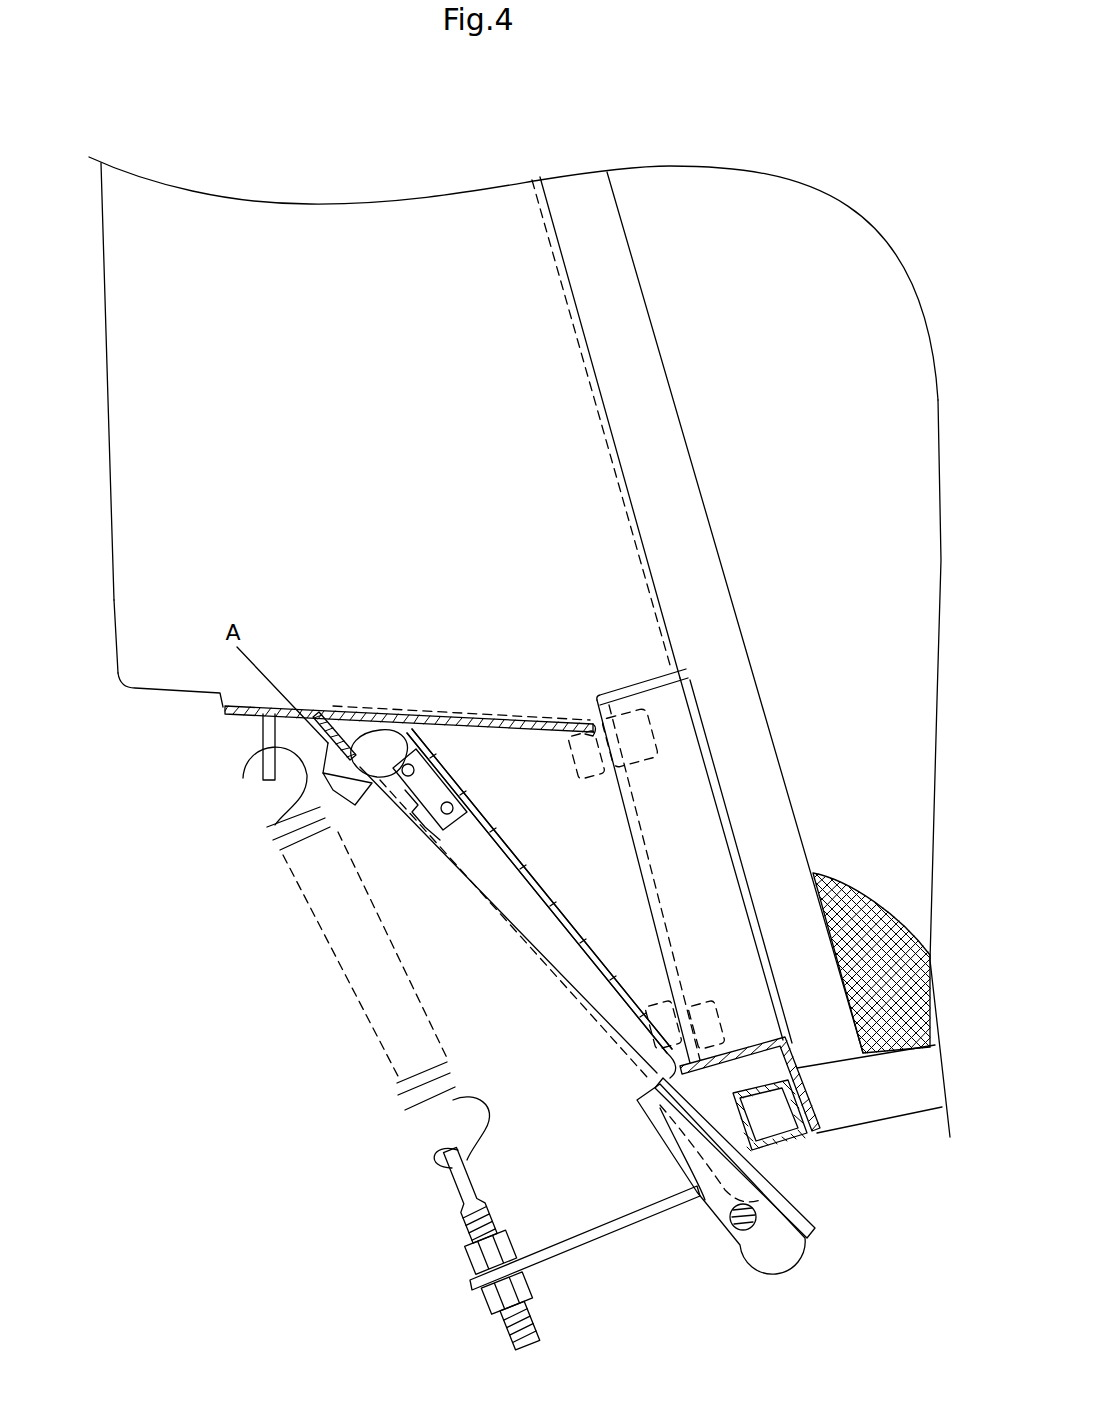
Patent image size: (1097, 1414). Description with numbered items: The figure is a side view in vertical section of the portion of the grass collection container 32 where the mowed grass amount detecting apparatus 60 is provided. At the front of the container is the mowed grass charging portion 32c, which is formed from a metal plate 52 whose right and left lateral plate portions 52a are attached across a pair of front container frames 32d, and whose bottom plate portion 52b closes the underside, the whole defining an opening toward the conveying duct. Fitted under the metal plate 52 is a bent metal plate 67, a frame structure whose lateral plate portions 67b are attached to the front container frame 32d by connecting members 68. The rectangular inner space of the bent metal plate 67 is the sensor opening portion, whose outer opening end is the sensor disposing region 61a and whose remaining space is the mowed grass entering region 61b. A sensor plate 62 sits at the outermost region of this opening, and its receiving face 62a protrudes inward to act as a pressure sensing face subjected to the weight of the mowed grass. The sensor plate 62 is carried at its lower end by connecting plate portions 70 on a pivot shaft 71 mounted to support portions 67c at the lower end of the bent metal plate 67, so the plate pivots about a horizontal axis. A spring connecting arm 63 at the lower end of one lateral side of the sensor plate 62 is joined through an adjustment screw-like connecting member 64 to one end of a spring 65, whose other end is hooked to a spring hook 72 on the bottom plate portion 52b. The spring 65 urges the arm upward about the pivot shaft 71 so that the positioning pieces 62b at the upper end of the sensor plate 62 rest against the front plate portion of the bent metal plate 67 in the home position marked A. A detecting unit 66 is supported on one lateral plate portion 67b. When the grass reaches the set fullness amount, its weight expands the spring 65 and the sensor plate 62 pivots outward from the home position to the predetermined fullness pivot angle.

The grass collection container 32 is at (677, 165).
The mowed grass charging portion 32c is at (100, 384).
The front container frame 32d is at (695, 547).
The metal plate 52 is at (323, 664).
The lateral plate portion 52a is at (127, 592).
The bottom plate portion 52b is at (347, 713).
The mowed grass amount detecting apparatus 60 is at (373, 1050).
The sensor disposing region 61a is at (408, 727).
The mowed grass entering region 61b is at (510, 760).
The sensor plate 62 is at (430, 895).
The receiving face 62a is at (527, 880).
The positioning piece 62b is at (327, 773).
The spring connecting arm 63 is at (585, 1248).
The adjustment screw-like connecting member 64 is at (500, 1225).
The spring 65 is at (280, 830).
The detecting unit 66 is at (477, 833).
The bent metal plate 67 is at (670, 1122).
The lateral plate portion 67b is at (617, 947).
The support portion 67c is at (700, 1200).
The connecting member 68 is at (640, 706).
The connecting plate portion 70 is at (673, 1170).
The pivot shaft 71 is at (742, 1232).
The spring hook 72 is at (263, 737).